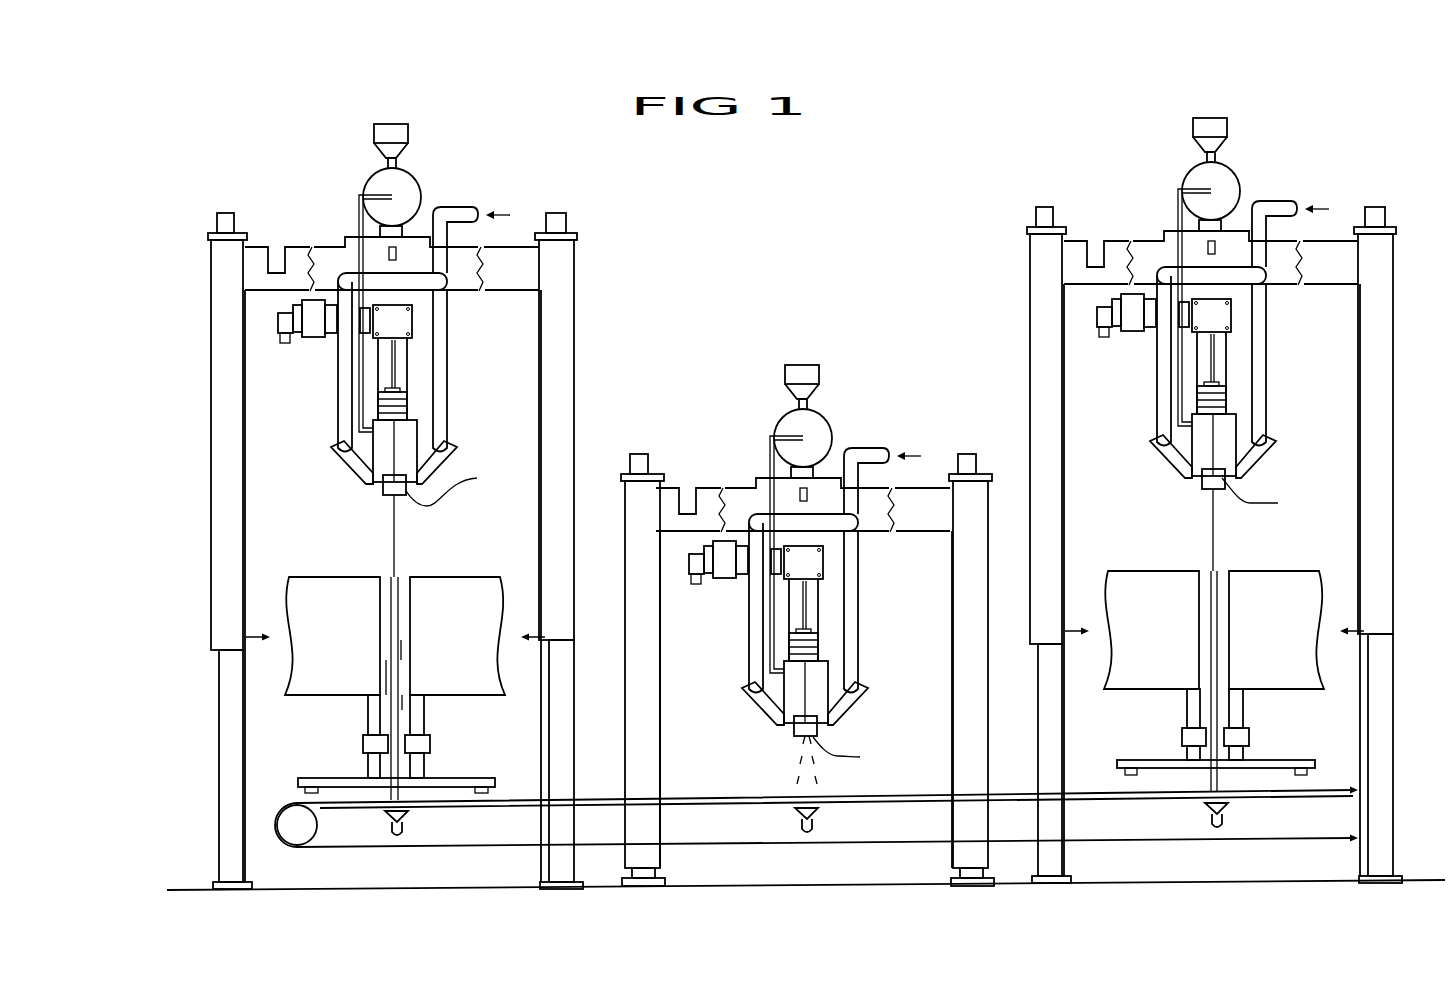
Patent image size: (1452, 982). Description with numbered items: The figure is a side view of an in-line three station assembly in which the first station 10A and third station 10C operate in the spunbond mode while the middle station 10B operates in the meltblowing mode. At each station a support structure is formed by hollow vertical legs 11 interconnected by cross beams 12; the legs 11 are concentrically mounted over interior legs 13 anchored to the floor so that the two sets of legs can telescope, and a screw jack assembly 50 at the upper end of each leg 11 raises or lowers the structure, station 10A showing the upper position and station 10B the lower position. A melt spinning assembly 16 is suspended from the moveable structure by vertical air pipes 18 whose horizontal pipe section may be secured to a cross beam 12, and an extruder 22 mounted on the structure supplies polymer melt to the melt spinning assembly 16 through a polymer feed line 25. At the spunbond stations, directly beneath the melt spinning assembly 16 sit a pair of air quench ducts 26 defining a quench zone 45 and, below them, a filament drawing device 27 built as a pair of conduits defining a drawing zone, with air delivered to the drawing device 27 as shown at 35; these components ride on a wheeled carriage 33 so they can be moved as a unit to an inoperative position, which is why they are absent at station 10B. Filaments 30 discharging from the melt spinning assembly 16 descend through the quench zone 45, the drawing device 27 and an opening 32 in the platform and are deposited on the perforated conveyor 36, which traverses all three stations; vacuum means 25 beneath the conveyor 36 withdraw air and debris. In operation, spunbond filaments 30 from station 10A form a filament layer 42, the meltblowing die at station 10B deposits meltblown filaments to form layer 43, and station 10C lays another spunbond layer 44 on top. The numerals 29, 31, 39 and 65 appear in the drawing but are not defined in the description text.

The first station 10A is at (464, 150).
The second station 10B is at (884, 380).
The third station 10C is at (1334, 131).
The vertical legs 11 is at (560, 297).
The cross beams 12 is at (276, 246).
The interior legs 13 is at (222, 775).
The melt spinning assembly 16 is at (333, 498).
The vertical air pipes 18 is at (345, 432).
The extruder 22 is at (377, 180).
The polymer feed line 25 is at (360, 222).
The air quench ducts 26 is at (340, 590).
The filament drawing device 27 is at (377, 740).
The lower rod sections 29 is at (365, 773).
The filaments 30 is at (397, 572).
The guide 31 is at (421, 706).
The opening 32 is at (410, 808).
The wheeled carriage 33 is at (387, 677).
The air supply to drawing device 35 is at (341, 747).
The conveyor 36 is at (482, 848).
The nozzle 39 is at (385, 808).
The filament layer 42 is at (603, 798).
The meltblown layer 43 is at (922, 788).
The second spunbond layer 44 is at (1340, 782).
The quench zone 45 is at (404, 652).
The screw jack assembly 50 is at (225, 213).
The hose 65 is at (855, 619).